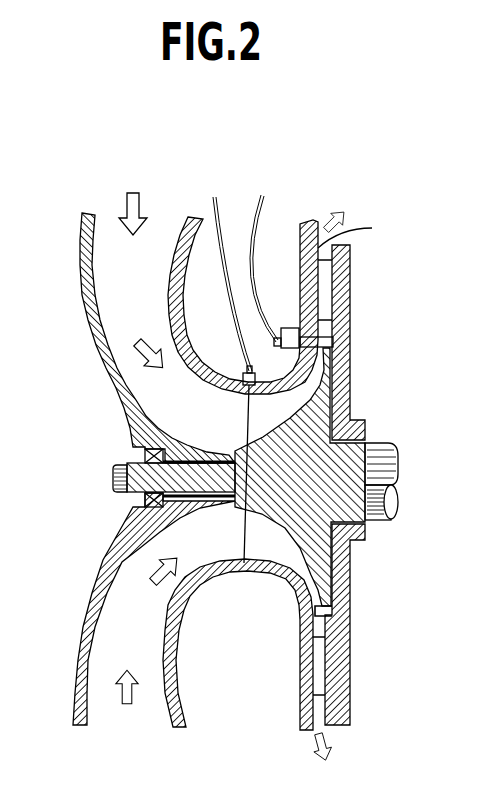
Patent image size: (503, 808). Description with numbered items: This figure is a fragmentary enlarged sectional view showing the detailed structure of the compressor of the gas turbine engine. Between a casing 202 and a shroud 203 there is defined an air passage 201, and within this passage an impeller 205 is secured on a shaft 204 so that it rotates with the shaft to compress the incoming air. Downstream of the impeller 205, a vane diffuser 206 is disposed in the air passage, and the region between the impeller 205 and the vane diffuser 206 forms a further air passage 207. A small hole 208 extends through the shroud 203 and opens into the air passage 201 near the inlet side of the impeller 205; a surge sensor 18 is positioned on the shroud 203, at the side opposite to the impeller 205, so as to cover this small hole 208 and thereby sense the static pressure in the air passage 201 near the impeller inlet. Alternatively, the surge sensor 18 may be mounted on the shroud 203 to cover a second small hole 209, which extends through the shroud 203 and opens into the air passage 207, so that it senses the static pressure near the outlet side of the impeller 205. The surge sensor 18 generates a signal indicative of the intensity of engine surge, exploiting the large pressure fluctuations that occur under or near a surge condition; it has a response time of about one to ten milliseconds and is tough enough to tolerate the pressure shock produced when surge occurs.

The air passage 201 is at (100, 256).
The casing 202 is at (98, 364).
The shroud 203 is at (190, 226).
The shaft 204 is at (388, 462).
The impeller 205 is at (303, 400).
The vane diffuser 206 is at (327, 281).
The air passage 207 is at (320, 333).
The small hole 208 is at (247, 393).
The small hole 209 is at (310, 337).
The surge sensor 18 is at (290, 349).